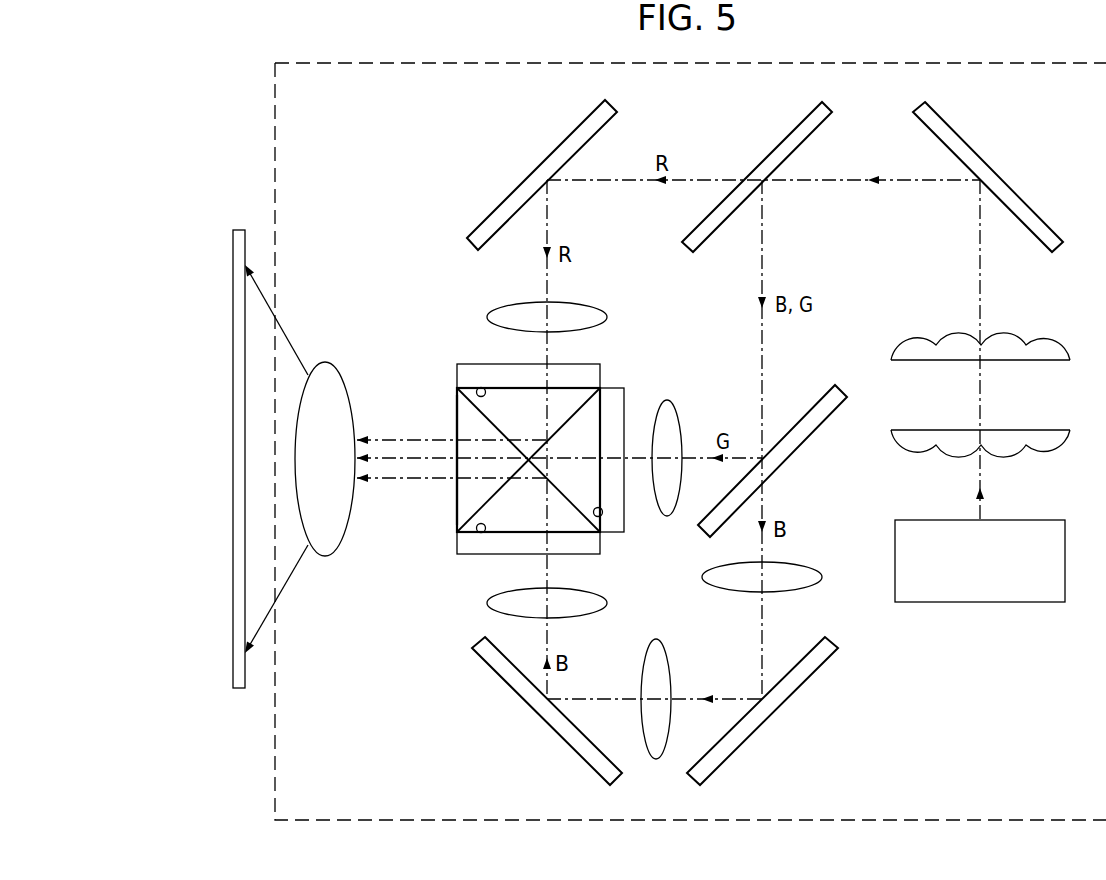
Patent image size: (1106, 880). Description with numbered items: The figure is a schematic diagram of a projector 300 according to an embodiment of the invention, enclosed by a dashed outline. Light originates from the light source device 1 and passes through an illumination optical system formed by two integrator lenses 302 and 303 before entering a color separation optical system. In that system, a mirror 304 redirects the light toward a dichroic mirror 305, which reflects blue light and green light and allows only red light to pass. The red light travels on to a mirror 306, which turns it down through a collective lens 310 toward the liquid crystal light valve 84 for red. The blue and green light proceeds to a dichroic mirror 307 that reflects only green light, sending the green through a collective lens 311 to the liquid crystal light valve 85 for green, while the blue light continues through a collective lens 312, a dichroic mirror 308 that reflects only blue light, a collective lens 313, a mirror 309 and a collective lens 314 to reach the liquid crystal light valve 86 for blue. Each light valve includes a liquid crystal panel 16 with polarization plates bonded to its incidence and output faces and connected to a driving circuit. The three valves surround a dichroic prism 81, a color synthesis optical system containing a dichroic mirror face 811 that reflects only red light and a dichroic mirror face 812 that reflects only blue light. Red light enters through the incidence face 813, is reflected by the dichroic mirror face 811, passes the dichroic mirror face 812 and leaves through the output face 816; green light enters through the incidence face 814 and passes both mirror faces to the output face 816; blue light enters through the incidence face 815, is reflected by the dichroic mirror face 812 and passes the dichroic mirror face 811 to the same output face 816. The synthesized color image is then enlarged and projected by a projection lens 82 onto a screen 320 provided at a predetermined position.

The light source device 1 is at (1033, 520).
The liquid crystal panel 16 is at (524, 461).
The dichroic prism 81 is at (534, 463).
The dichroic mirror face 811 is at (488, 492).
The dichroic mirror face 812 is at (490, 425).
The incidence face 813 is at (483, 390).
The incidence face 814 is at (600, 513).
The incidence face 815 is at (478, 531).
The output face 816 is at (457, 403).
The projection lens 82 is at (327, 363).
The liquid crystal light valve 84 is at (485, 372).
The liquid crystal light valve 85 is at (615, 395).
The liquid crystal light valve 86 is at (580, 548).
The projector 300 is at (1040, 60).
The integrator lens 302 is at (1045, 433).
The integrator lens 303 is at (1045, 335).
The mirror 304 is at (968, 143).
The dichroic mirror 305 is at (777, 143).
The mirror 306 is at (563, 148).
The dichroic mirror 307 is at (800, 440).
The dichroic mirror 308 is at (800, 680).
The mirror 309 is at (548, 720).
The collective lens 310 is at (530, 307).
The collective lens 311 is at (665, 405).
The collective lens 312 is at (805, 582).
The collective lens 313 is at (655, 757).
The collective lens 314 is at (502, 608).
The screen 320 is at (233, 607).